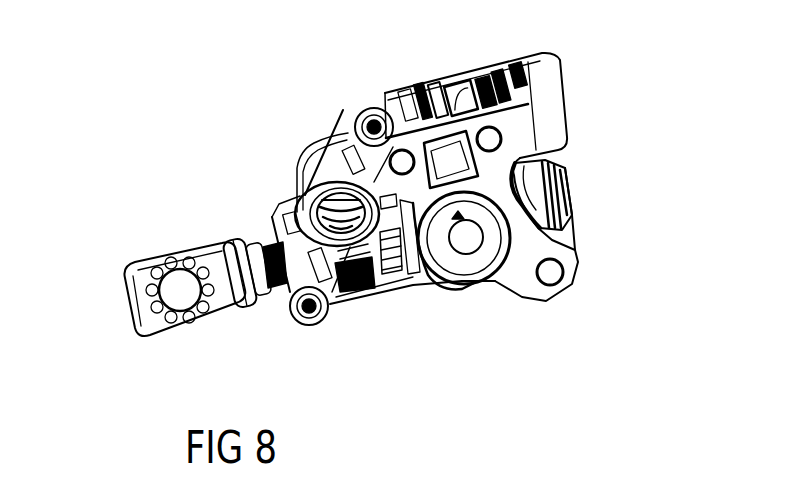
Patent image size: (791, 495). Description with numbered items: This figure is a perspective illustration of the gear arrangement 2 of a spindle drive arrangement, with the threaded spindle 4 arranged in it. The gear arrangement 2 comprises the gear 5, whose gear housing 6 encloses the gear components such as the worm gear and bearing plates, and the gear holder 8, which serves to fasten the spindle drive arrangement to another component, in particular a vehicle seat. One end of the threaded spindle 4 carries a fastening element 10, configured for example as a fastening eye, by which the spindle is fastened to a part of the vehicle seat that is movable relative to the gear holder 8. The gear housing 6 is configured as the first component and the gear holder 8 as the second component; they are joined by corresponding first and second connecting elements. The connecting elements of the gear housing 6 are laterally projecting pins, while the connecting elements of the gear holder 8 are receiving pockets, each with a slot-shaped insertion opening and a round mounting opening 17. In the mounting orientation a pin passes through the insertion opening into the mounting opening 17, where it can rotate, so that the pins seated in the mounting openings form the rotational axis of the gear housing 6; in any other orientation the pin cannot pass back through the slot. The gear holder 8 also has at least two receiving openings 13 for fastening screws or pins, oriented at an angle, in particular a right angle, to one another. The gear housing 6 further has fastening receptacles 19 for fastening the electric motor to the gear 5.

The gear arrangement 2 is at (590, 70).
The threaded spindle 4 is at (265, 242).
The gear 5 is at (372, 286).
The gear housing 6 is at (391, 251).
The gear holder 8 is at (560, 168).
The fastening element 10 is at (138, 304).
The receiving openings 13 is at (340, 140).
The mounting opening 17 is at (458, 210).
The fastening receptacles 19 is at (369, 118).